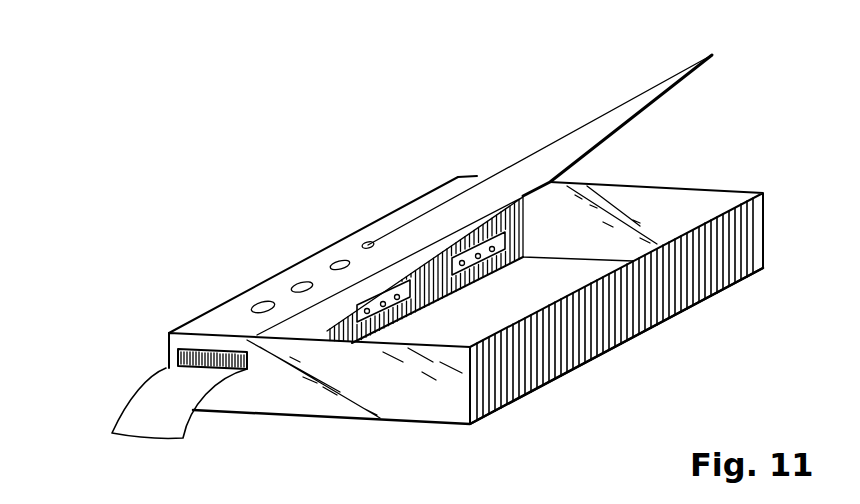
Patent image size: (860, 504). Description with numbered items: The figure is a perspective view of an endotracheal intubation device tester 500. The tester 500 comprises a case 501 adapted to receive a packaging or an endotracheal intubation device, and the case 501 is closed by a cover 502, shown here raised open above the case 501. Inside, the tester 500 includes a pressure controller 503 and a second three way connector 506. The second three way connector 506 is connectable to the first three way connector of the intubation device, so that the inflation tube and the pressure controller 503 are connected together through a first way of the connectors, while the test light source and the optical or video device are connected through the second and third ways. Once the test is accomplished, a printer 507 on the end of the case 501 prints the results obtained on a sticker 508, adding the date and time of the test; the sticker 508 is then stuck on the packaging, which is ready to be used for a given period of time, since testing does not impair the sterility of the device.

The endotracheal intubation device tester 500 is at (291, 246).
The case 501 is at (576, 370).
The cover 502 is at (597, 127).
The pressure controller 503 is at (368, 242).
The second three way connector 506 is at (372, 318).
The printer 507 is at (193, 346).
The sticker 508 is at (147, 405).